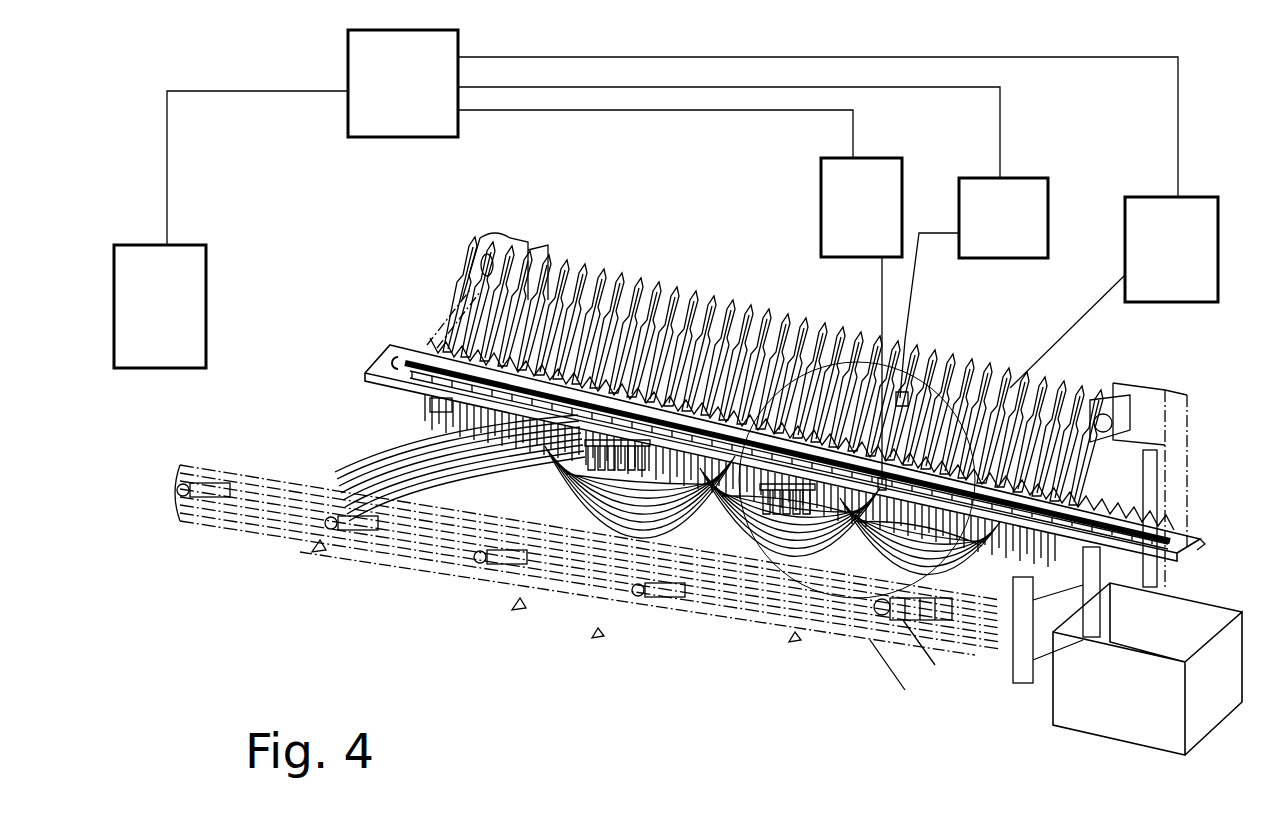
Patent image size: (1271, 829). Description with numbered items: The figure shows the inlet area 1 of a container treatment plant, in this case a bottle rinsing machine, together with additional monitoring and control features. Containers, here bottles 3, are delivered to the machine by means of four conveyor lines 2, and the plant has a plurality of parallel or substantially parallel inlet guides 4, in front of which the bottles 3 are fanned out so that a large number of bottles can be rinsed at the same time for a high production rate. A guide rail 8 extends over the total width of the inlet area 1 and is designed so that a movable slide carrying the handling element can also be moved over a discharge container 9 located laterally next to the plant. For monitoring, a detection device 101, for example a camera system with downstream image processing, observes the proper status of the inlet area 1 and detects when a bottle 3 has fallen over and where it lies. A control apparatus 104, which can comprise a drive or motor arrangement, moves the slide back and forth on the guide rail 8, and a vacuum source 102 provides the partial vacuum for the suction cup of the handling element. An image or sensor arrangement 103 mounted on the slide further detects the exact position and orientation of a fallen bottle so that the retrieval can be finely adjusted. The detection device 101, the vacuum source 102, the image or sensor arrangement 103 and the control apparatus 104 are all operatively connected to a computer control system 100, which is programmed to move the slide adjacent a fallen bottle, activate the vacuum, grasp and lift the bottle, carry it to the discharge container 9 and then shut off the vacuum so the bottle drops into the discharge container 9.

The inlet area 1 is at (425, 300).
The conveyor lines 2 is at (180, 495).
The bottles 3 is at (595, 430).
The inlet guides 4 is at (430, 405).
The guide rail 8 is at (1175, 533).
The discharge container 9 is at (1200, 616).
The computer control system 100 is at (383, 110).
The detection device 101 is at (131, 335).
The vacuum source 102 is at (830, 237).
The image or sensor arrangement 103 is at (983, 244).
The control apparatus 104 is at (1150, 279).